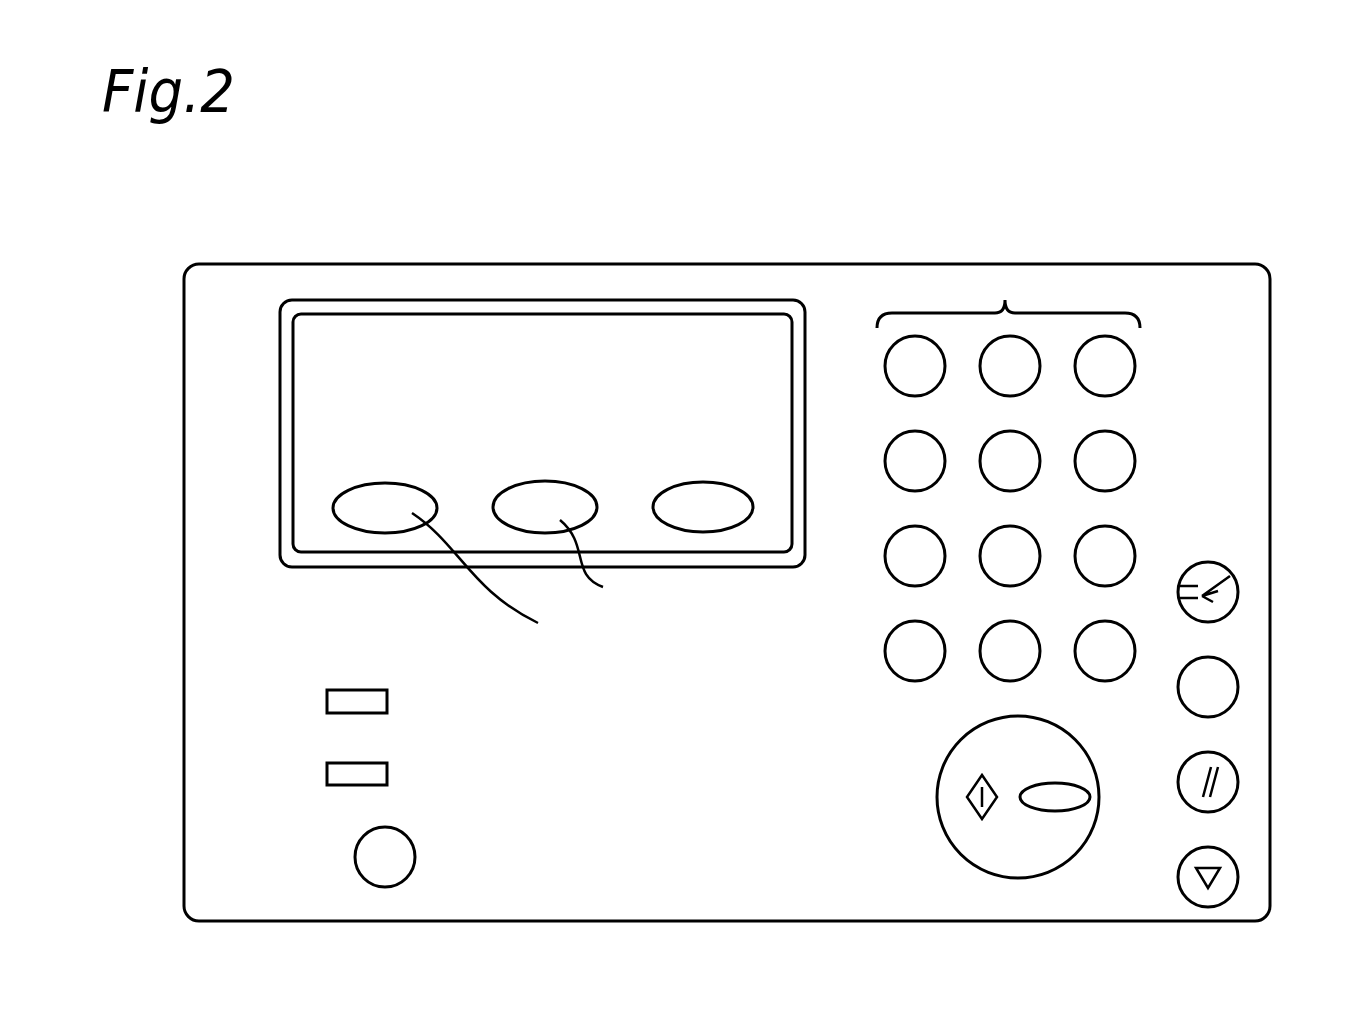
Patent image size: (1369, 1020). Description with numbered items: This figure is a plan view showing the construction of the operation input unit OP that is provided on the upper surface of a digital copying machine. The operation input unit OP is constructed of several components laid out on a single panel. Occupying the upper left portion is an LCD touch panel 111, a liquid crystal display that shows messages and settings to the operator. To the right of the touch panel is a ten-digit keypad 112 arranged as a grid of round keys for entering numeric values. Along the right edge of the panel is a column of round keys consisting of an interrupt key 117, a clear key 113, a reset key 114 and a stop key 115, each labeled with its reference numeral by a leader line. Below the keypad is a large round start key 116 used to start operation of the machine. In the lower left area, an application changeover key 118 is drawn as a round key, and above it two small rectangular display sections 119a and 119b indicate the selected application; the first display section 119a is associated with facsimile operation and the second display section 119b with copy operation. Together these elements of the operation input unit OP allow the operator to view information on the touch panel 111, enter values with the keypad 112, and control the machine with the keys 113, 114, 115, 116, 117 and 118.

The operation input unit OP is at (308, 238).
The LCD touch panel 111 is at (715, 308).
The ten-digit keypad 112 is at (1005, 300).
The clear key 113 is at (1238, 691).
The reset key 114 is at (1238, 786).
The stop key 115 is at (1238, 881).
The start key 116 is at (1070, 860).
The interrupt key 117 is at (1238, 596).
The application changeover key 118 is at (415, 860).
The display section 119a is at (327, 702).
The display section 119b is at (327, 774).